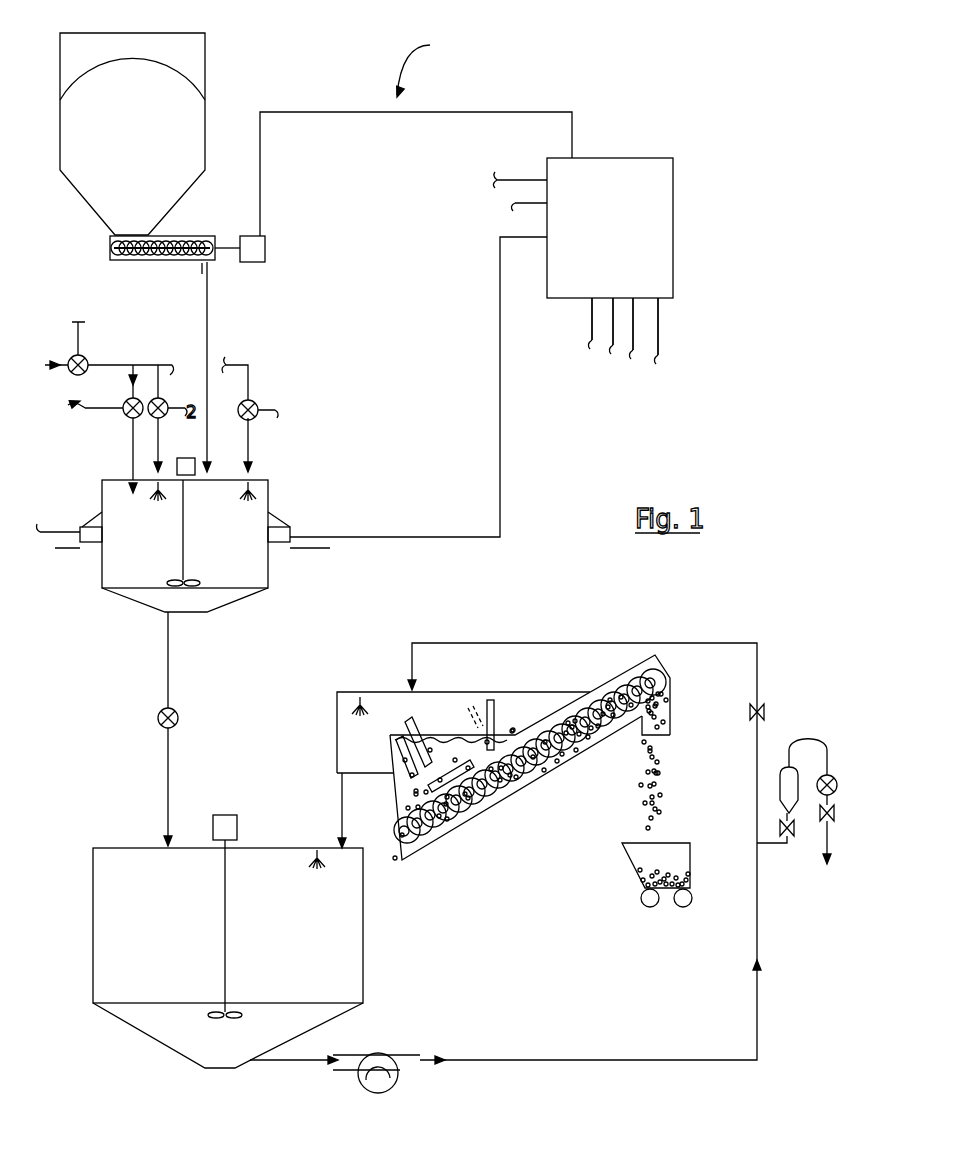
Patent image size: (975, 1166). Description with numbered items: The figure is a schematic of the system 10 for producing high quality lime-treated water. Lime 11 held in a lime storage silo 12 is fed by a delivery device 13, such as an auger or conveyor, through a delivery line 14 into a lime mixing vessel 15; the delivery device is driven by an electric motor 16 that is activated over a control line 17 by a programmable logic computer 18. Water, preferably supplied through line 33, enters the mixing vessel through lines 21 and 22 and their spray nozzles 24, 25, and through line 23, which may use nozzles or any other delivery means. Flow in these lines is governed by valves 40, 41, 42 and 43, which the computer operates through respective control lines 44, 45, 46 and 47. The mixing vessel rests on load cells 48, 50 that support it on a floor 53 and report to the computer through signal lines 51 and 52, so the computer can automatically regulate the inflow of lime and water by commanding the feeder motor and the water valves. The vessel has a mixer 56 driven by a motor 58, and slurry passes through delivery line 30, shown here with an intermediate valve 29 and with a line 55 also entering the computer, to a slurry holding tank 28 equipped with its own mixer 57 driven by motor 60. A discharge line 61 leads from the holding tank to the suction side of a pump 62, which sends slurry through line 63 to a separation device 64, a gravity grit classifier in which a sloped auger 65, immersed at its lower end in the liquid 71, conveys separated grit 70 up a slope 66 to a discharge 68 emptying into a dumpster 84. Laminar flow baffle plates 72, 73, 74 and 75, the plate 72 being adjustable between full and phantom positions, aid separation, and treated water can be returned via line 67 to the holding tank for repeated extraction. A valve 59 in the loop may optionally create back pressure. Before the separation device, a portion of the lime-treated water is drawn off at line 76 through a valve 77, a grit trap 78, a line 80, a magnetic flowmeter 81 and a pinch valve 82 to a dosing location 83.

The system 10 is at (426, 65).
The lime 11 is at (154, 131).
The lime storage silo 12 is at (205, 56).
The delivery device 13 is at (175, 236).
The delivery line 14 is at (210, 315).
The lime mixing vessel 15 is at (265, 480).
The electric motor 16 is at (265, 248).
The control line 17 is at (445, 112).
The programmable logic computer 18 is at (673, 212).
The water line 21 is at (250, 375).
The water line 22 is at (160, 437).
The water line 23 is at (130, 467).
The spray nozzle 24 is at (246, 492).
The spray nozzle 25 is at (165, 495).
The slurry holding tank 28 is at (187, 848).
The valve 29 is at (178, 718).
The delivery line 30 is at (170, 688).
The water supply line 33 is at (100, 365).
The water supply valve 40 is at (257, 403).
The water supply valve 41 is at (166, 400).
The water supply valve 42 is at (140, 400).
The water supply valve 43 is at (72, 355).
The control line 44 is at (277, 412).
The control line 45 is at (196, 404).
The control line 46 is at (68, 405).
The control line 47 is at (88, 330).
The load cell 48 is at (290, 527).
The load cell 50 is at (85, 527).
The signal line 51 is at (408, 537).
The signal line 52 is at (535, 203).
The floor 53 is at (318, 548).
The signal line 55 is at (510, 180).
The mixer 56 is at (200, 585).
The mixer 57 is at (237, 1015).
The mixer motor 58 is at (195, 460).
The valve 59 is at (765, 705).
The mixer motor 60 is at (237, 832).
The discharge line 61 is at (275, 1062).
The pump 62 is at (385, 1055).
The delivery line 63 is at (680, 1062).
The separation device 64 is at (460, 692).
The sloped auger 65 is at (528, 790).
The slope 66 is at (475, 820).
The return line 67 is at (342, 805).
The discharge 68 is at (671, 722).
The grit 70 is at (655, 790).
The liquid 71 is at (435, 735).
The baffle plate 72 is at (490, 694).
The laminar flow plate 73 is at (432, 848).
The laminar flow plate 74 is at (405, 740).
The laminar flow plate 75 is at (400, 755).
The extraction line 76 is at (773, 845).
The valve 77 is at (793, 833).
The grit trap 78 is at (787, 755).
The line 80 is at (832, 752).
The magnetic flowmeter 81 is at (838, 782).
The pinch valve 82 is at (833, 810).
The dosing location 83 is at (832, 845).
The dumpster 84 is at (678, 843).